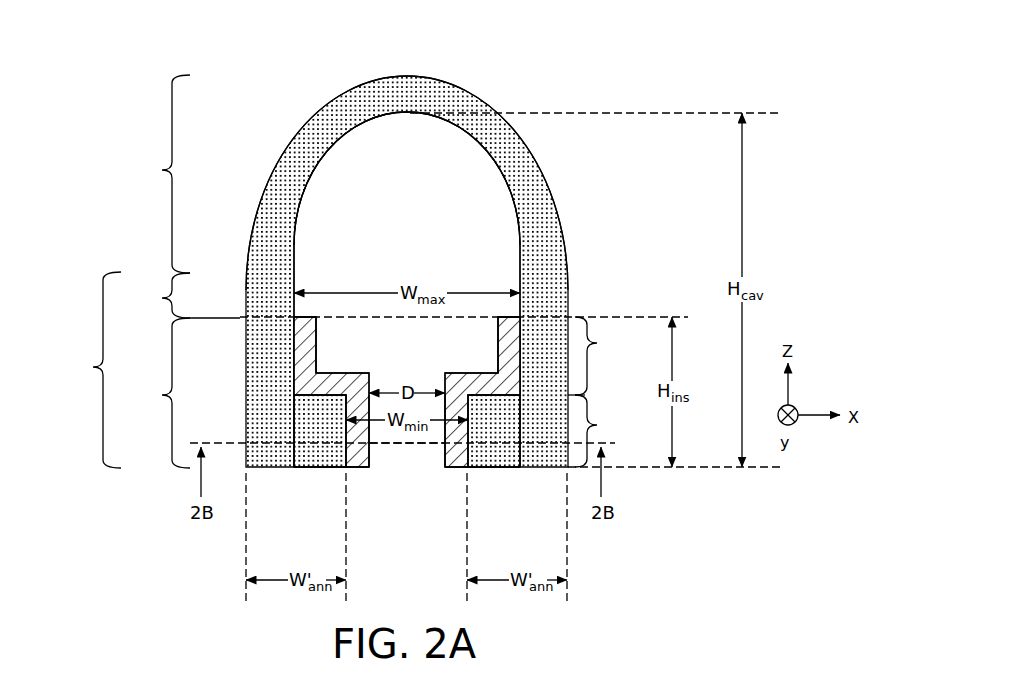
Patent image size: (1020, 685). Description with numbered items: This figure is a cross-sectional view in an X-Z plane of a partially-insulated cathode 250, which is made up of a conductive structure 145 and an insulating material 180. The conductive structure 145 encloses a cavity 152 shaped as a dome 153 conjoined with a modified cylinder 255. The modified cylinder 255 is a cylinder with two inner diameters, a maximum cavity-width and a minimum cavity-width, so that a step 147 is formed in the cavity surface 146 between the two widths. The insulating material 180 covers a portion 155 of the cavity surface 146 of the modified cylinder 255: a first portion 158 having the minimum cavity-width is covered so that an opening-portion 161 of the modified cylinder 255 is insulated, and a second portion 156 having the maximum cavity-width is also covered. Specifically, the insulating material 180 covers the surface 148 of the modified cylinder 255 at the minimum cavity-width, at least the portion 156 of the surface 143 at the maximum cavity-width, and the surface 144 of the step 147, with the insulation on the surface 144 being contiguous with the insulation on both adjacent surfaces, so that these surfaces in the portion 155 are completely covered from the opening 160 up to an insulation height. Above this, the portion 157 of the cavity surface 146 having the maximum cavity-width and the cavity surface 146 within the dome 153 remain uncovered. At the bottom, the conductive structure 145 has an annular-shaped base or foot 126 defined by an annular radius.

The partially-insulated cathode 250 is at (571, 98).
The cavity 152 is at (388, 244).
The dome 153 is at (156, 174).
The portion of the cavity surface 157 is at (188, 295).
The portion of the cavity surface 155 is at (159, 393).
The modified cylinder 255 is at (85, 370).
The conductive structure 145 is at (555, 197).
The cavity surface 146 is at (297, 250).
The surface of the modified cylinder having the maximum cavity-width 143 is at (293, 372).
The insulating material 180 is at (317, 362).
The step 147 is at (312, 396).
The second portion of the modified cylinder 156 is at (602, 356).
The first portion of the modified cylinder 158 is at (602, 431).
The surface of the step 144 is at (323, 396).
The surface of the modified cylinder having the minimum cavity-width 148 is at (339, 448).
The opening-portion of the modified cylinder 161 is at (374, 463).
The annular-shaped base or foot 126 is at (318, 467).
The opening 160 is at (407, 508).